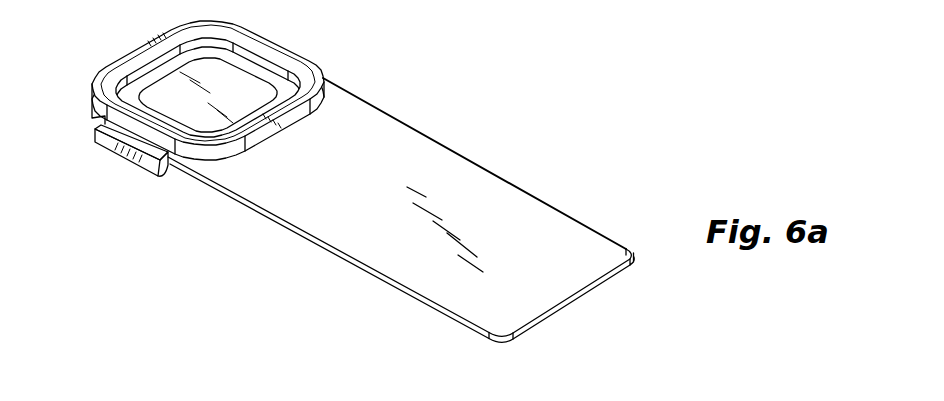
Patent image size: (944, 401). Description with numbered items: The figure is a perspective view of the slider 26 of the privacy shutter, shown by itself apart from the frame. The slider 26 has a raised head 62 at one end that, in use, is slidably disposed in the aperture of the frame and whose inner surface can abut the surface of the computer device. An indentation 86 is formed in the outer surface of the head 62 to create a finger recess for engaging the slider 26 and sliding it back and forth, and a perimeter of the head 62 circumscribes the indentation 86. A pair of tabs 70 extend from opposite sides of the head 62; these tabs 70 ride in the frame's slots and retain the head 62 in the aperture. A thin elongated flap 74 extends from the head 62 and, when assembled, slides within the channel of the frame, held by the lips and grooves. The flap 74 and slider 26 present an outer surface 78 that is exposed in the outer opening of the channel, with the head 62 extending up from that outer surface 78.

The slider 26 is at (523, 192).
The head 62 is at (130, 73).
The tabs 70 is at (130, 157).
The flap 74 is at (545, 275).
The outer surface 78 is at (323, 193).
The indentation 86 is at (245, 80).